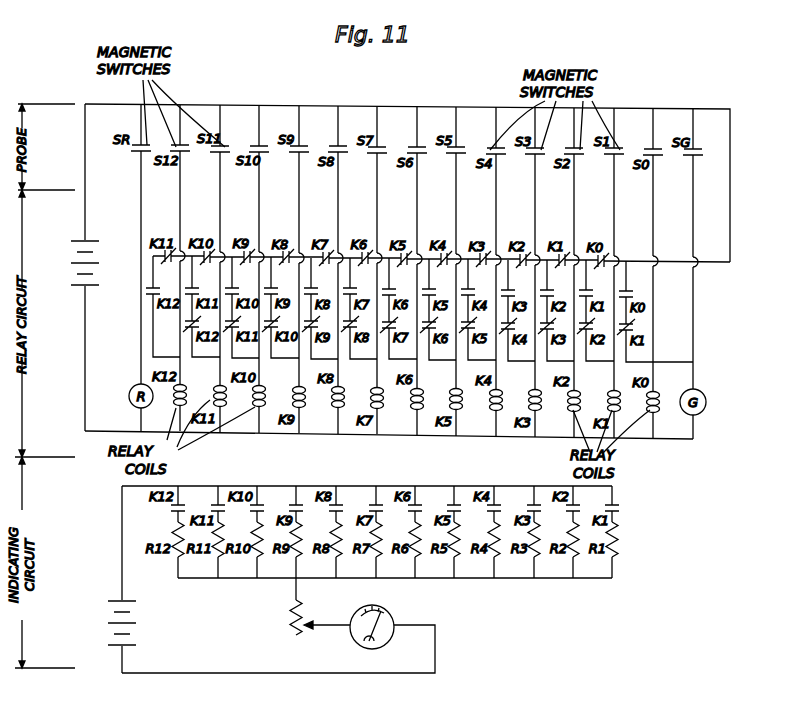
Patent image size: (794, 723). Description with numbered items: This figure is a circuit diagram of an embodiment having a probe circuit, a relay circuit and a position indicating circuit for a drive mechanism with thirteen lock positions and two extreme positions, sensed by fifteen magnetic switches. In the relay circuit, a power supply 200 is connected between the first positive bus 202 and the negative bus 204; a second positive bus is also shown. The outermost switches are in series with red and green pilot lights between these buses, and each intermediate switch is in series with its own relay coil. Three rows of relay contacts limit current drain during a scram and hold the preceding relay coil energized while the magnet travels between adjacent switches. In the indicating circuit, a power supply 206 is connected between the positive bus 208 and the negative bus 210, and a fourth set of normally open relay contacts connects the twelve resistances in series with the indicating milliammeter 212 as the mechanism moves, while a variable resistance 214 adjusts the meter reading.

The power supply 200 is at (72, 262).
The first positive bus 202 is at (200, 105).
The negative bus 204 is at (480, 435).
The power supply 206 is at (106, 620).
The positive bus 208 is at (210, 485).
The negative bus 210 is at (267, 673).
The indicating milliammeter 212 is at (392, 617).
The variable resistance 214 is at (290, 624).